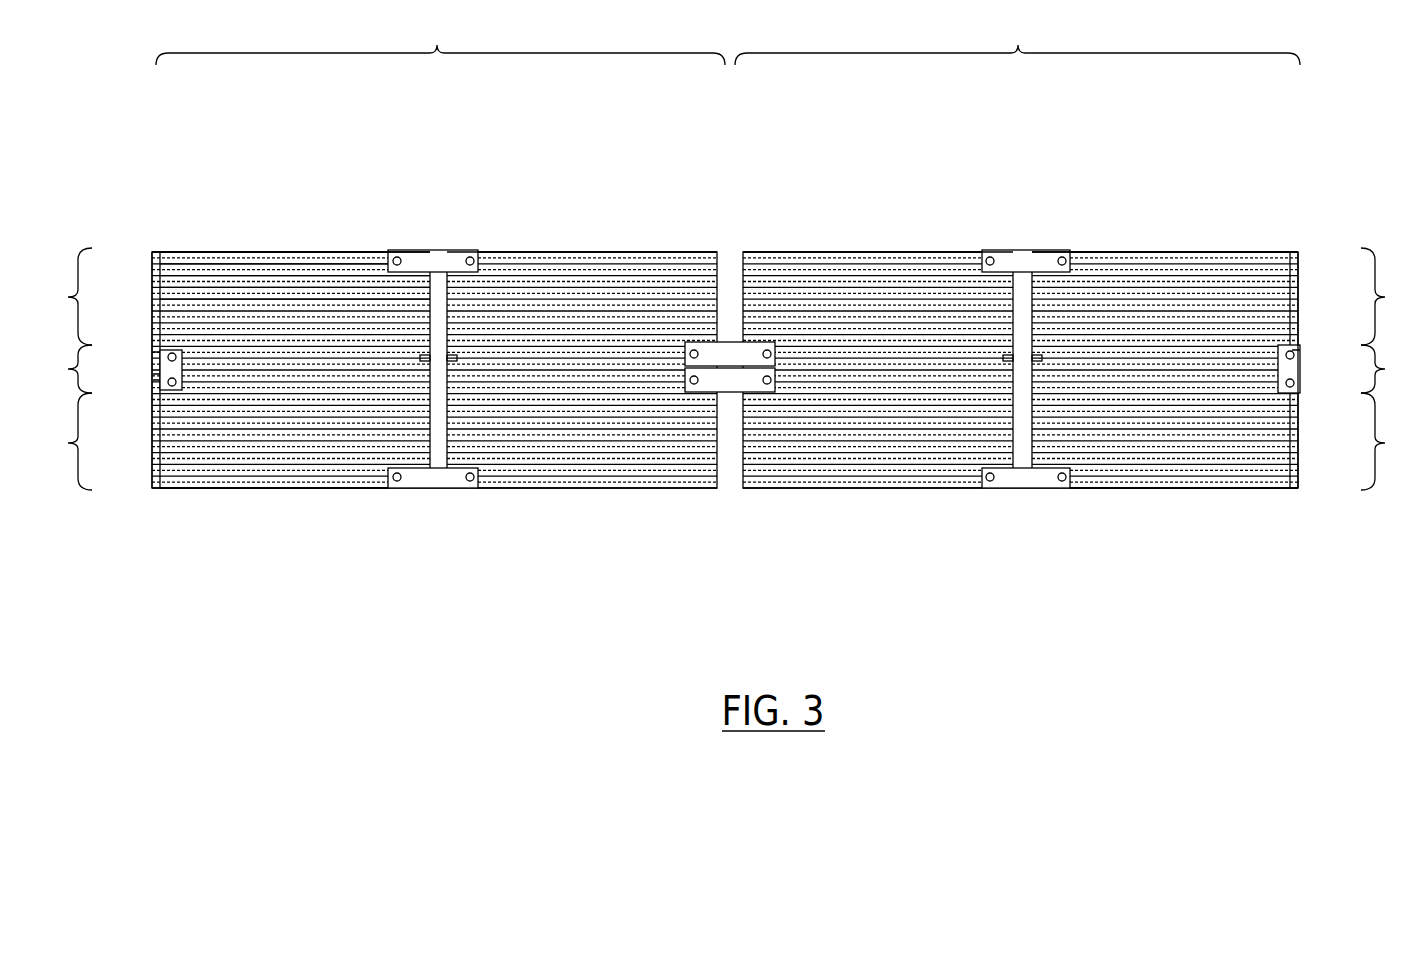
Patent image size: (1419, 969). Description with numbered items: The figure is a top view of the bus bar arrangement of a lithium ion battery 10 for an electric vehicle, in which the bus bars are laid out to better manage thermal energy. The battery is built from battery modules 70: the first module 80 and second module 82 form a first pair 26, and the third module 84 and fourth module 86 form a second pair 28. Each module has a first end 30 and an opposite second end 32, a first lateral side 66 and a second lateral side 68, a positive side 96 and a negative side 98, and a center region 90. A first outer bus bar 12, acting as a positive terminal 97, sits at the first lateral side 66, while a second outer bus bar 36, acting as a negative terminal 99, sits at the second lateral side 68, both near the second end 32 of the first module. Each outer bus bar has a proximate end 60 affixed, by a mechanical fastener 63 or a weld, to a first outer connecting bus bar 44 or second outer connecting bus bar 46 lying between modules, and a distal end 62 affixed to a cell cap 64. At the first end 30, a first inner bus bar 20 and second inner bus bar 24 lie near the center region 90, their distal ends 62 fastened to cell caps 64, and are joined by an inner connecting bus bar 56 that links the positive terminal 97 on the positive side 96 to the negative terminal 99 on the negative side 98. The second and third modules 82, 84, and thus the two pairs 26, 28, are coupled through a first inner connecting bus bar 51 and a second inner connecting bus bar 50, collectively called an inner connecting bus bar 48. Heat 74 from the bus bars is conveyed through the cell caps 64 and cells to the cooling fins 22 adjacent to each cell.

The lithium ion battery 10 is at (748, 140).
The first outer bus bar 12 is at (992, 252).
The first inner bus bar 20 is at (226, 363).
The cooling fin 22 is at (1298, 475).
The second inner bus bar 24 is at (735, 402).
The first pair of modules 26 is at (440, 41).
The second pair of modules 28 is at (1017, 41).
The first end 30 is at (156, 348).
The second end 32 is at (458, 350).
The second outer bus bar 36 is at (1110, 491).
The first outer connecting bus bar 44 is at (1020, 262).
The second outer connecting bus bar 46 is at (1024, 489).
The inner connecting bus bar 48 is at (693, 330).
The second inner connecting bus bar 50 is at (690, 395).
The first inner connecting bus bar 51 is at (693, 330).
The inner connecting bus bar 56 is at (1285, 366).
The proximate end 60 is at (1060, 491).
The distal end 62 is at (1176, 402).
The mechanical fastener 63 is at (1062, 482).
The cell cap 64 is at (1240, 489).
The first lateral side 66 is at (211, 248).
The second lateral side 68 is at (221, 492).
The battery module 70 is at (290, 198).
The heat 74 is at (1220, 402).
The first module 80 is at (290, 198).
The second module 82 is at (570, 250).
The third module 84 is at (878, 198).
The fourth module 86 is at (1170, 198).
The center region 90 is at (690, 452).
The positive side 96 is at (724, 369).
The positive terminal 97 is at (1110, 491).
The negative side 98 is at (730, 369).
The negative terminal 99 is at (735, 402).